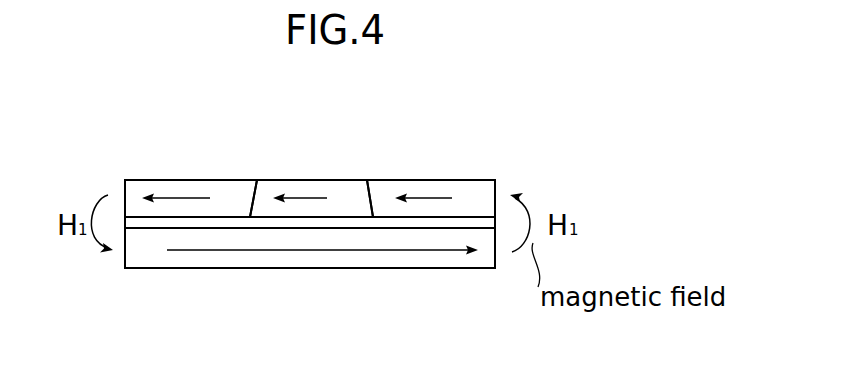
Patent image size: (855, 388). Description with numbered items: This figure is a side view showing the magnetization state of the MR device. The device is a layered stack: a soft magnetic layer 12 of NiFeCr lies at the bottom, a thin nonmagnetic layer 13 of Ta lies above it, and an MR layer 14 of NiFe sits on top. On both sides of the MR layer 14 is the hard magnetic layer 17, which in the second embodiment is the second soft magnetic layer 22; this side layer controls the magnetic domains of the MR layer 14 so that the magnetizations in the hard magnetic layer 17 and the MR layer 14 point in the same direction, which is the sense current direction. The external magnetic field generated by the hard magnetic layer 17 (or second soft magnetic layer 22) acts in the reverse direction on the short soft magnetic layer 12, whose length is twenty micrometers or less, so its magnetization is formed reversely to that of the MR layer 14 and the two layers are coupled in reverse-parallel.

The soft magnetic layer 12 is at (366, 255).
The nonmagnetic layer 13 is at (224, 217).
The MR layer 14 is at (303, 178).
The hard magnetic layer 17 is at (192, 180).
The second soft magnetic layer 22 is at (315, 159).